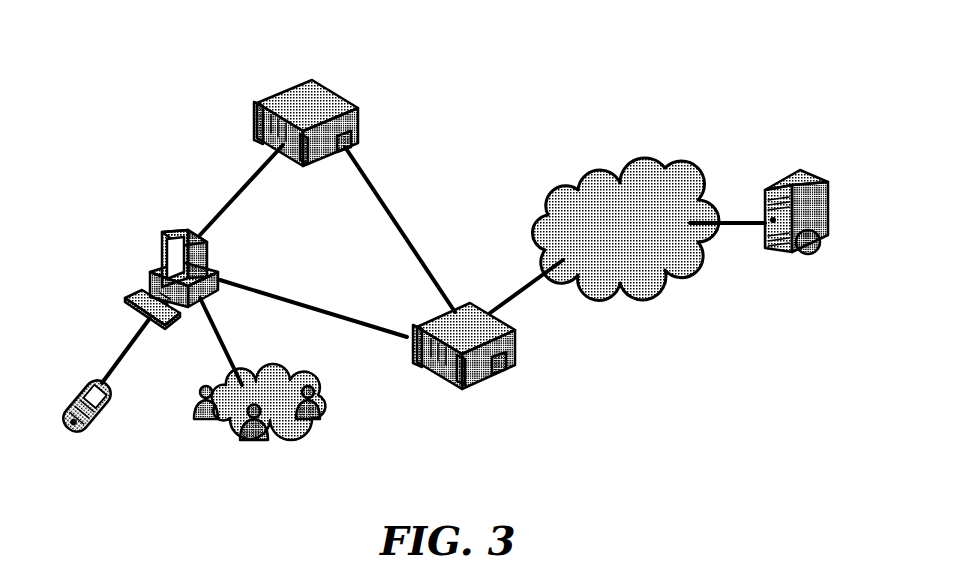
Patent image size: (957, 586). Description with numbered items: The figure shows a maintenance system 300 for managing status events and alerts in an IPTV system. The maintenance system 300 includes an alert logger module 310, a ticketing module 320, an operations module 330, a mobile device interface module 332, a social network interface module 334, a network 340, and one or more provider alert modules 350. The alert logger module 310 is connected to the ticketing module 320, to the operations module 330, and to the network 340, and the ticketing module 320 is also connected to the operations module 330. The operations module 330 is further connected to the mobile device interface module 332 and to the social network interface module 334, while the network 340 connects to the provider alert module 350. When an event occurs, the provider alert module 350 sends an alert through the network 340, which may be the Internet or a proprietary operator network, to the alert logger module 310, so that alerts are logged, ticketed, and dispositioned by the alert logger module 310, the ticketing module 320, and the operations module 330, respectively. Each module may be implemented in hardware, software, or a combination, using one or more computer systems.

The maintenance system 300 is at (86, 515).
The alert logger module 310 is at (500, 372).
The ticketing module 320 is at (296, 95).
The operations module 330 is at (162, 232).
The mobile device interface module 332 is at (100, 387).
The social network interface module 334 is at (282, 383).
The network 340 is at (657, 167).
The provider alert module 350 is at (790, 178).